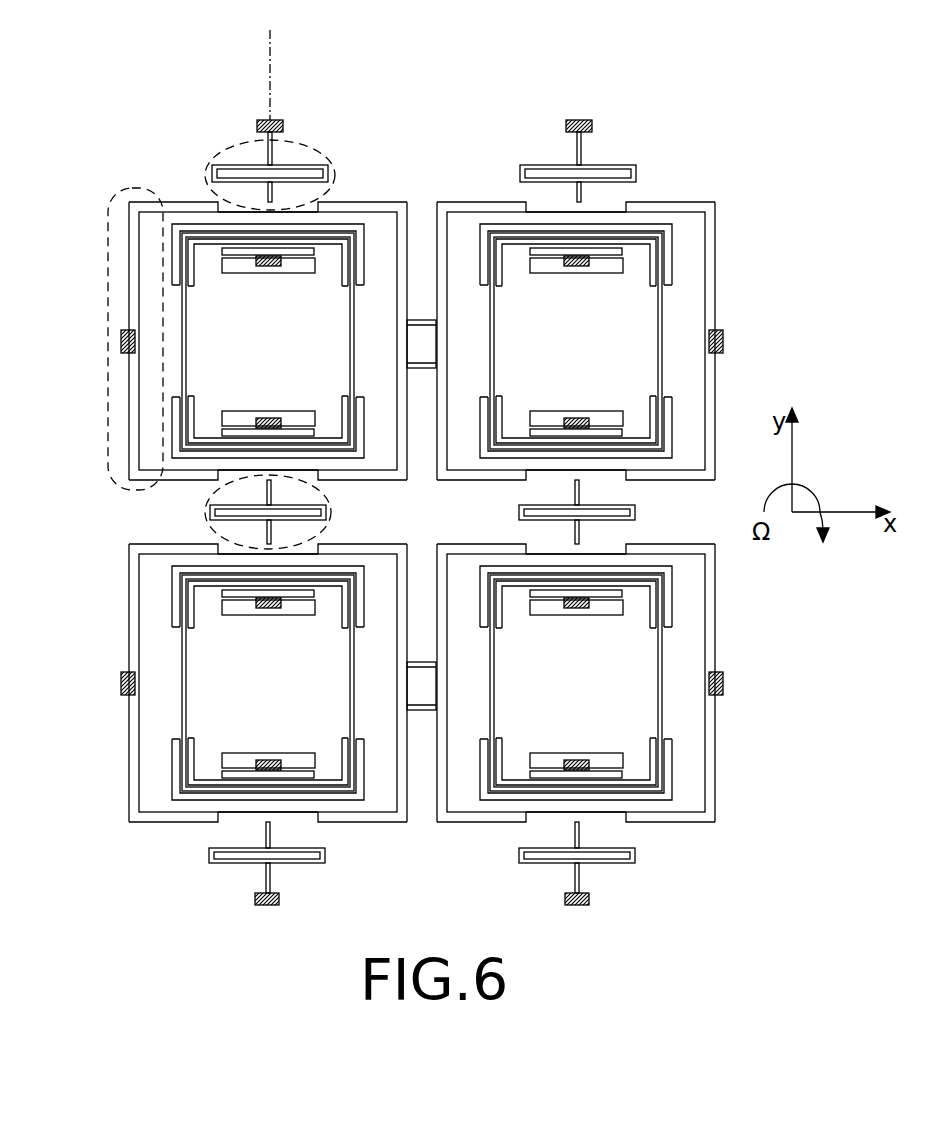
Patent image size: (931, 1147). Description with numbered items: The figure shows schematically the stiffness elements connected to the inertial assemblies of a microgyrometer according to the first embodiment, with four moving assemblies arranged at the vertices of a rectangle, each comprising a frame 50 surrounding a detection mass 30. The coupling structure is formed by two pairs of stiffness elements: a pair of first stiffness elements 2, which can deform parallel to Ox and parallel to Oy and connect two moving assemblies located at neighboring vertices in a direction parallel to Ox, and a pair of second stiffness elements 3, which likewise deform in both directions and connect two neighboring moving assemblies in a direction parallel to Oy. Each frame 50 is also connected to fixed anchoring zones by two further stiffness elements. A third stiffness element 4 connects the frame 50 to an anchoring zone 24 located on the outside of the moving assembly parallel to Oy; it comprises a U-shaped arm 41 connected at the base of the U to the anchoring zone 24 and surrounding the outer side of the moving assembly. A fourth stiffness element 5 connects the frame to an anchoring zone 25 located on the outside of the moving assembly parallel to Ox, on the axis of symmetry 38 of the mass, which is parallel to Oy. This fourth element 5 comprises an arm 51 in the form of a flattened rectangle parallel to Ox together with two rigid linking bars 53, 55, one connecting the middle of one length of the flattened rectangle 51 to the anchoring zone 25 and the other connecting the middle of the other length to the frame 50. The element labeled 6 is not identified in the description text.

The first stiffness element 2 is at (460, 200).
The second stiffness element 3 is at (207, 512).
The third stiffness element 4 is at (110, 402).
The fourth stiffness element 5 is at (290, 135).
The electrode 6 is at (255, 262).
The anchoring zone 24 is at (122, 342).
The anchoring zone 25 is at (262, 119).
The detection mass 30 is at (212, 303).
The axis of symmetry 38 is at (268, 63).
The U-shaped arm 41 is at (136, 488).
The frame 50 is at (160, 313).
The arm in the form of a flattened rectangle 51 is at (300, 163).
The rigid linking bar 53 is at (276, 197).
The rigid linking bar 55 is at (273, 150).